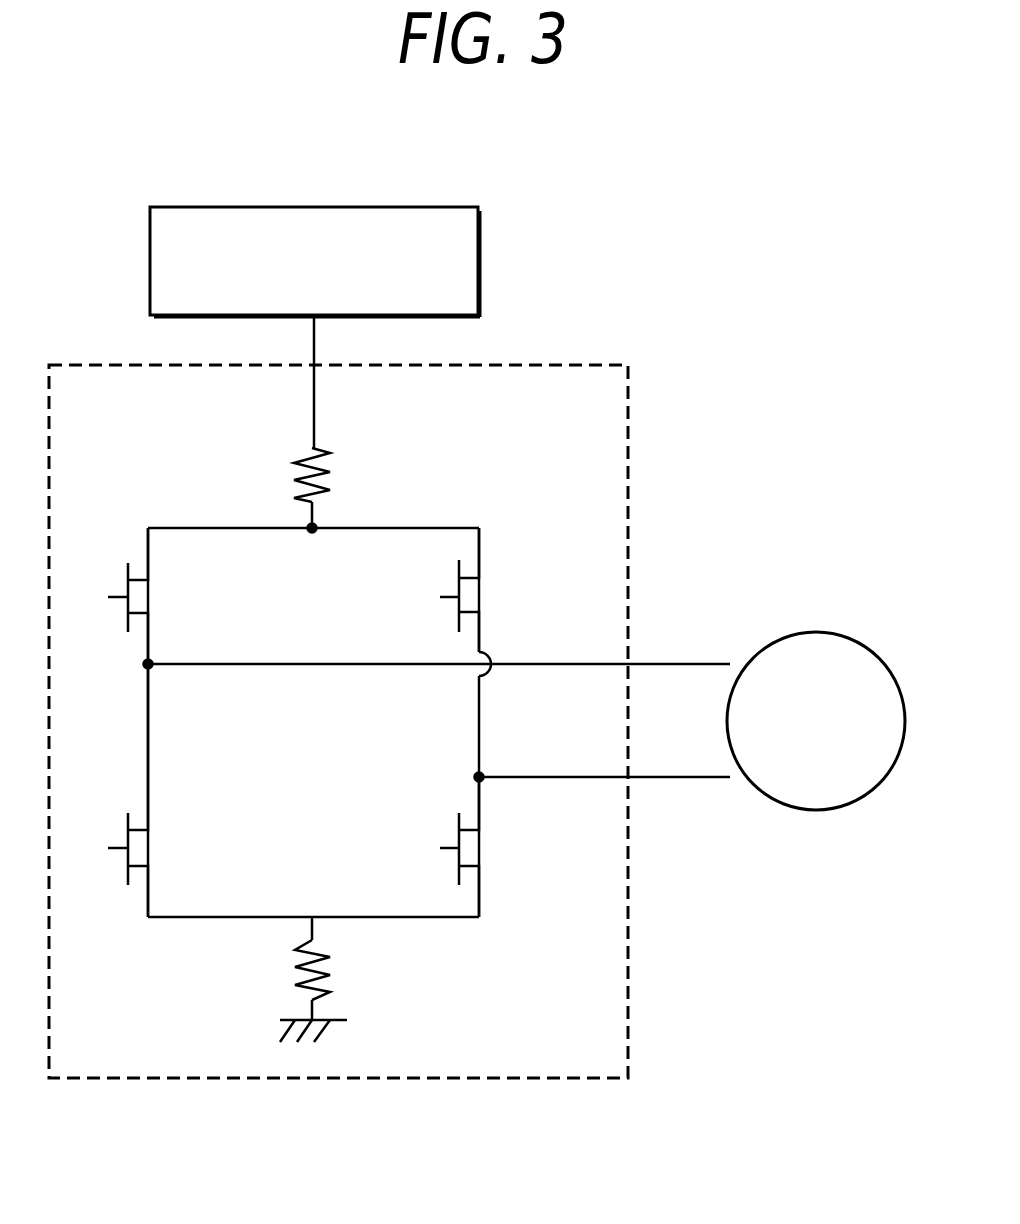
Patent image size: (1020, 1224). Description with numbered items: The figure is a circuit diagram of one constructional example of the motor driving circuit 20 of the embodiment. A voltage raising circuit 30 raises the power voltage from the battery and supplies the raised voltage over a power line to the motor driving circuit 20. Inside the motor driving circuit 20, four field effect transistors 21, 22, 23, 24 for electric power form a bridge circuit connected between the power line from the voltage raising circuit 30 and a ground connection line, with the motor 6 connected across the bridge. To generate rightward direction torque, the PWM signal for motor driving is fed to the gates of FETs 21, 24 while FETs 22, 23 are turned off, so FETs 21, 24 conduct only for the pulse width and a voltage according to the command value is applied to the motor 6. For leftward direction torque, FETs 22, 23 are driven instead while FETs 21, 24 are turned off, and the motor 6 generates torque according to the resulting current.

The voltage raising circuit 30 is at (482, 256).
The motor driving circuit 20 is at (630, 470).
The field effect transistor 21 is at (176, 592).
The field effect transistor 22 is at (176, 843).
The field effect transistor 23 is at (509, 591).
The field effect transistor 24 is at (509, 843).
The motor 6 is at (812, 633).